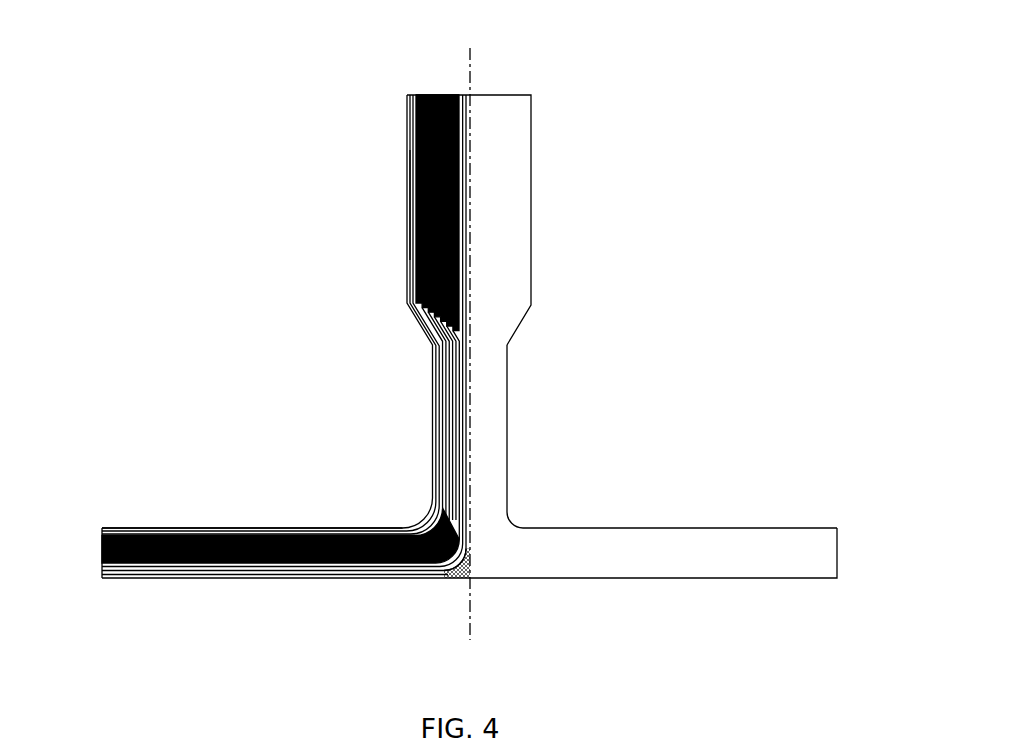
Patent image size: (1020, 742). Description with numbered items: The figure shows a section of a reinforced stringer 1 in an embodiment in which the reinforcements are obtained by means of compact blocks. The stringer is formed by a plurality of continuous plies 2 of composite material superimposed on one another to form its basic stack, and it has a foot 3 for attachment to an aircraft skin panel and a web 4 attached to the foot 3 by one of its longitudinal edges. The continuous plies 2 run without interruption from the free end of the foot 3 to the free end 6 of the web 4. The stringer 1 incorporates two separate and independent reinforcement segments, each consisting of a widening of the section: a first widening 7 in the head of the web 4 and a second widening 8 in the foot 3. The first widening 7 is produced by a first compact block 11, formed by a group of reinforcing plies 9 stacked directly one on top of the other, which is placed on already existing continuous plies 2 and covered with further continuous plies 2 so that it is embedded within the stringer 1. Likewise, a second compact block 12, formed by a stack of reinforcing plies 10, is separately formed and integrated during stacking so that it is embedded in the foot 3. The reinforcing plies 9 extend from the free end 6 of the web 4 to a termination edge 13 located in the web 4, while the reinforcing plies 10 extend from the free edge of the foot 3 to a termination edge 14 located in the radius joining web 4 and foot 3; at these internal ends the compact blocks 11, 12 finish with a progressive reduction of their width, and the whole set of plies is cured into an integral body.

The reinforced stringer 1 is at (605, 412).
The continuous plies 2 is at (412, 153).
The foot 3 is at (213, 518).
The web 4 is at (509, 371).
The free end of the web 6 is at (500, 94).
The first widening 7 is at (410, 206).
The second widening 8 is at (267, 528).
The reinforcing plies of the web 9 is at (440, 94).
The reinforcing plies of the foot 10 is at (102, 547).
The first compact block 11 is at (420, 258).
The second compact block 12 is at (147, 535).
The termination edge of the web reinforcement 13 is at (423, 329).
The termination edge of the foot reinforcement 14 is at (455, 522).